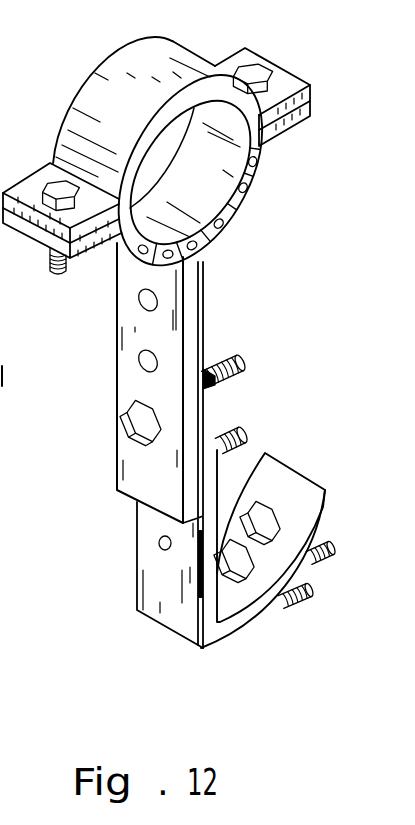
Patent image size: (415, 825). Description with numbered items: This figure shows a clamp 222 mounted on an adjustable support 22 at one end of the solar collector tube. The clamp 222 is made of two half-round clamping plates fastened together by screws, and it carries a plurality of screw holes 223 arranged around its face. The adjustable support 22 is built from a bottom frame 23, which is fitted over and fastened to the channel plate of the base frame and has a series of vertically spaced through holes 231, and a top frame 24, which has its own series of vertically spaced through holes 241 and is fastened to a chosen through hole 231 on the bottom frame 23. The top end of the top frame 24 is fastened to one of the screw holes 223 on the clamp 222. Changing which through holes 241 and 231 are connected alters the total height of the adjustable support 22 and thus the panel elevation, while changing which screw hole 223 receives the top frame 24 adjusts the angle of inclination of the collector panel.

The adjustable support 22 is at (180, 455).
The bottom frame 23 is at (256, 607).
The top frame 24 is at (160, 383).
The clamp 222 is at (72, 248).
The screw holes 223 is at (218, 228).
The through holes 231 is at (158, 543).
The through holes 241 is at (159, 303).